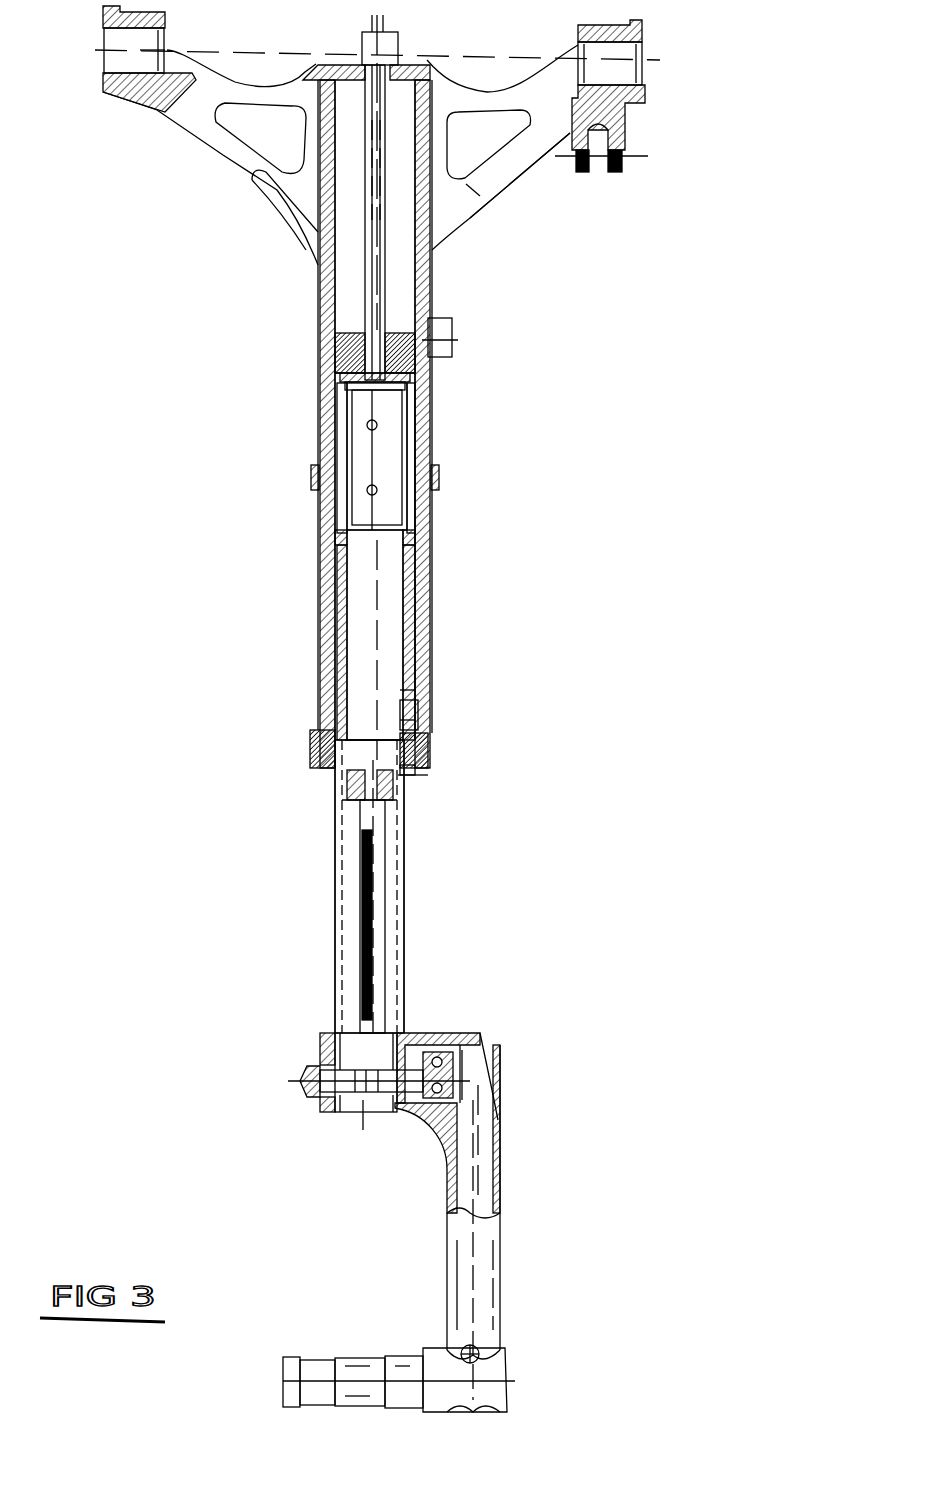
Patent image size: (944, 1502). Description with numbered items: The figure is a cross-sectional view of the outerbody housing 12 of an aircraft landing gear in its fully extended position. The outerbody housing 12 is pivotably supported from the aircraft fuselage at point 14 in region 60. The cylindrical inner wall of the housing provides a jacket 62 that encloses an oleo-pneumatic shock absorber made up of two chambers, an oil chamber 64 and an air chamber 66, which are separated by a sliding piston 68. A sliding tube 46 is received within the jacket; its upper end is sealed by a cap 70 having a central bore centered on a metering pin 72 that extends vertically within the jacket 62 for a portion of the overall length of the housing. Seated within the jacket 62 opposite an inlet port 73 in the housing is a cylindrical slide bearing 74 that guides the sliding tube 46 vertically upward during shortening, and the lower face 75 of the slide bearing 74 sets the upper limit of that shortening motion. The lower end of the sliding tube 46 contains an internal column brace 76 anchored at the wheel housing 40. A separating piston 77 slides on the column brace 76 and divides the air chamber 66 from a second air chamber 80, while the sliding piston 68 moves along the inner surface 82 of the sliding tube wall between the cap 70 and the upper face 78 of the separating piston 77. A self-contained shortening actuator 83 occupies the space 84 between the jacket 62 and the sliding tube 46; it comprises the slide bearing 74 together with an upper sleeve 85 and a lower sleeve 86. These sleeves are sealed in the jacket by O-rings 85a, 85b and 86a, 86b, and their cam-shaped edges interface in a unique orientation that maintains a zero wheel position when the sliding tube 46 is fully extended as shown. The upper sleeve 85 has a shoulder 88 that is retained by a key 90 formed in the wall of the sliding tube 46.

The outerbody housing 12 is at (312, 438).
The point 14 is at (650, 78).
The wheel housing 40 is at (420, 1032).
The sliding tube 46 is at (400, 945).
The region 60 is at (473, 190).
The jacket 62 is at (318, 332).
The oil chamber 64 is at (405, 240).
The air chamber 66 is at (405, 425).
The sliding piston 68 is at (402, 462).
The cap 70 is at (435, 318).
The metering pin 72 is at (366, 268).
The inlet port 73 is at (455, 353).
The slide bearing 74 is at (428, 372).
The lower face 75 is at (433, 396).
The internal column brace 76 is at (380, 880).
The separating piston 77 is at (350, 790).
The upper face 78 is at (330, 718).
The air chamber 80 is at (340, 862).
The inner surface 82 is at (348, 583).
The shortening actuator 83 is at (318, 360).
The space 84 is at (318, 474).
The upper sleeve 85 is at (430, 606).
The O-ring 85a is at (432, 543).
The O-ring 85b is at (432, 560).
The lower sleeve 86 is at (425, 770).
The O-ring 86a is at (415, 736).
The O-ring 86b is at (420, 790).
The shoulder 88 is at (420, 706).
The key 90 is at (430, 686).